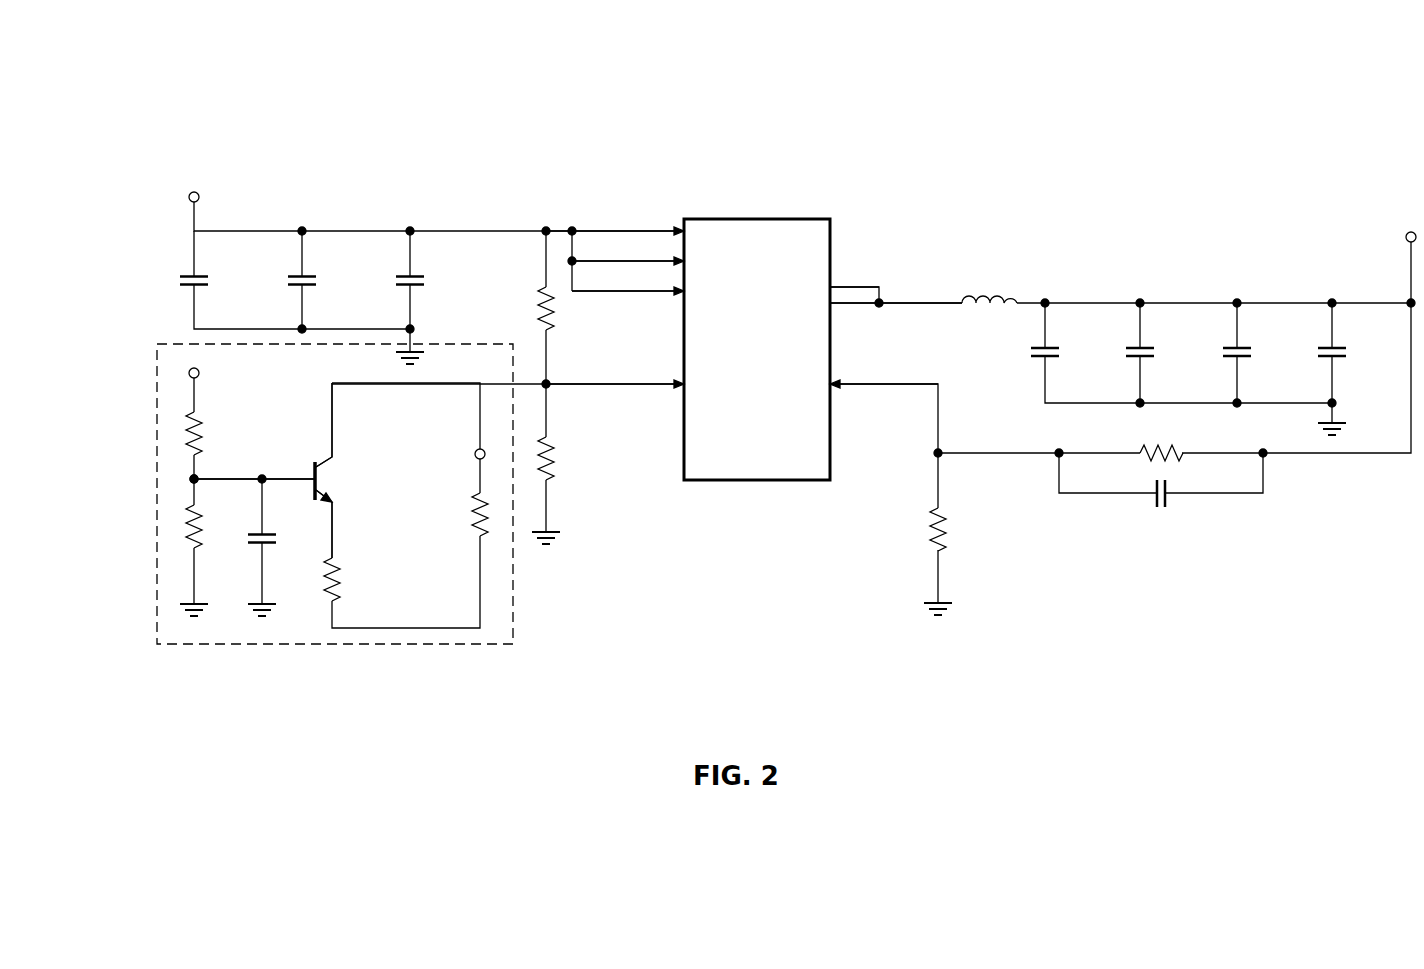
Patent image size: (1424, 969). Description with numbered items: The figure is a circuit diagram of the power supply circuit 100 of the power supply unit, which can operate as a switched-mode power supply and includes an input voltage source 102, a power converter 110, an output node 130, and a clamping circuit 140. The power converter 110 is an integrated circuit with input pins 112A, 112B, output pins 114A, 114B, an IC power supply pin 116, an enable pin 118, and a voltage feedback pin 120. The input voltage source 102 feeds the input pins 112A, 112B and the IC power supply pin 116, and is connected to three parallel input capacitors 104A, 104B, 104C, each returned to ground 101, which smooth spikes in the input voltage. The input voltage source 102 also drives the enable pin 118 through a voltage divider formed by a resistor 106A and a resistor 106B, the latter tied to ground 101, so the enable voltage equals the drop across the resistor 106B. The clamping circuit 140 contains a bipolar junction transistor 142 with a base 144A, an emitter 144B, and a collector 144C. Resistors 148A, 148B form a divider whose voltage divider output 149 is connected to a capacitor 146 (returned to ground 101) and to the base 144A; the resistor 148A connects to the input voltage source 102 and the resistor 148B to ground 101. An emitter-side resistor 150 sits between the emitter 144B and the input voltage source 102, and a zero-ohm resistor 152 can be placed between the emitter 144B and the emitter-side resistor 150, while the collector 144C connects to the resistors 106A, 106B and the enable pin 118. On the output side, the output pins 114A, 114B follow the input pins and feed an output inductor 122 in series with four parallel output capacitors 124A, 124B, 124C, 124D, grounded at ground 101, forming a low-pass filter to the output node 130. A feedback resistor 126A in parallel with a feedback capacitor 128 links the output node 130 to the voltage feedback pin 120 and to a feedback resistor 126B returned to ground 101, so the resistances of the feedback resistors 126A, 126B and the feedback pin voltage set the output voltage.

The power supply circuit 100 is at (298, 87).
The ground 101 is at (400, 353).
The input voltage source 102 is at (191, 192).
The input capacitor 104A is at (188, 276).
The input capacitor 104B is at (297, 276).
The input capacitor 104C is at (405, 276).
The resistor 106A is at (542, 291).
The resistor 106B is at (549, 440).
The power converter 110 is at (712, 218).
The input pin 112A is at (682, 228).
The input pin 112B is at (682, 258).
The output pin 114A is at (835, 287).
The output pin 114B is at (835, 305).
The IC power supply pin 116 is at (682, 288).
The enable pin 118 is at (682, 382).
The voltage feedback pin 120 is at (838, 383).
The output inductor 122 is at (978, 297).
The output capacitor 124A is at (1041, 348).
The output capacitor 124B is at (1136, 348).
The output capacitor 124C is at (1233, 348).
The output capacitor 124D is at (1328, 348).
The feedback resistor 126A is at (1142, 448).
The feedback resistor 126B is at (941, 508).
The feedback capacitor 128 is at (1155, 508).
The output node 130 is at (1408, 232).
The clamping circuit 140 is at (467, 645).
The bipolar junction transistor 142 is at (311, 450).
The base 144A is at (310, 474).
The emitter 144B is at (330, 495).
The collector 144C is at (322, 462).
The capacitor 146 is at (272, 546).
The resistor 148A is at (188, 421).
The resistor 148B is at (188, 513).
The voltage divider output 149 is at (189, 478).
The emitter-side resistor 150 is at (477, 498).
The resistor 152 is at (336, 560).